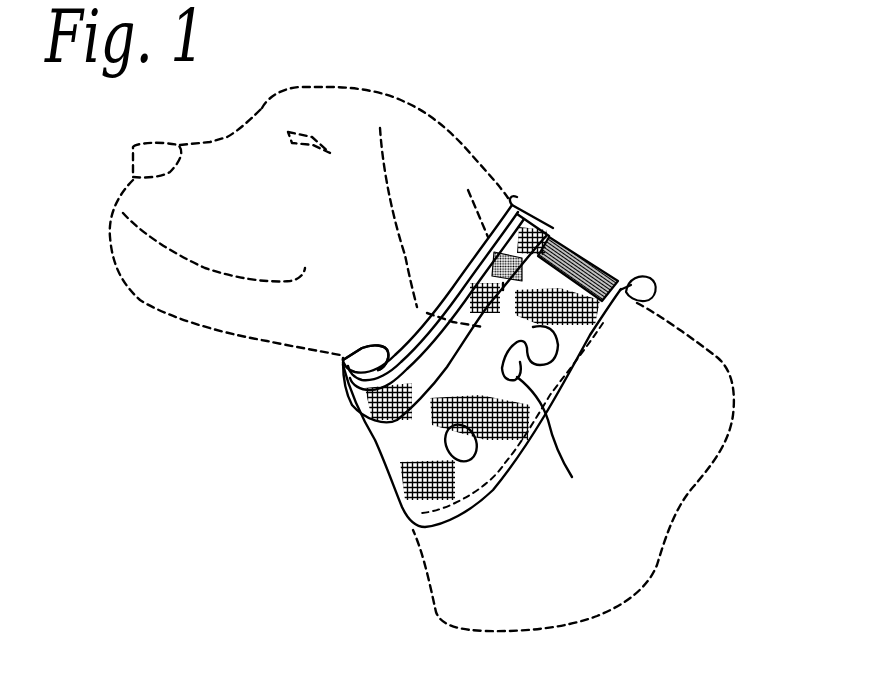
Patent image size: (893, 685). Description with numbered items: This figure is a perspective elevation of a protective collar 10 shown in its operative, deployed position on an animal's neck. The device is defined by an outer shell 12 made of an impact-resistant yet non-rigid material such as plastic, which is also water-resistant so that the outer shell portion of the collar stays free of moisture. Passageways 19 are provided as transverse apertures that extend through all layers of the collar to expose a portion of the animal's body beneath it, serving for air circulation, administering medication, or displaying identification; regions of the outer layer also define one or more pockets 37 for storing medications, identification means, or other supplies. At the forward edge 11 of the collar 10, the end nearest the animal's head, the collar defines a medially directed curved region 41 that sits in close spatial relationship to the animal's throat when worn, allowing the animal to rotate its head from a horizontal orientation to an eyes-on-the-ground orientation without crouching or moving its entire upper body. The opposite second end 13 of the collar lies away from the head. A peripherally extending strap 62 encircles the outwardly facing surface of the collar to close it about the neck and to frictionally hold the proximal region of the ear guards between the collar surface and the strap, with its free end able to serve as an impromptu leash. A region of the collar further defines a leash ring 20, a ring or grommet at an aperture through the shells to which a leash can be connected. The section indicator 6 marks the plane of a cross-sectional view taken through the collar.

The protective collar 10 is at (318, 478).
The forward edge 11 is at (518, 192).
The outer shell 12 is at (603, 293).
The second end 13 is at (450, 530).
The passageways 19 is at (470, 442).
The leash ring 20 is at (653, 299).
The pockets 37 is at (538, 337).
The medially directed curved region 41 is at (385, 348).
The peripherally extending strap 62 is at (517, 328).
The section line 6- 6 is at (345, 490).